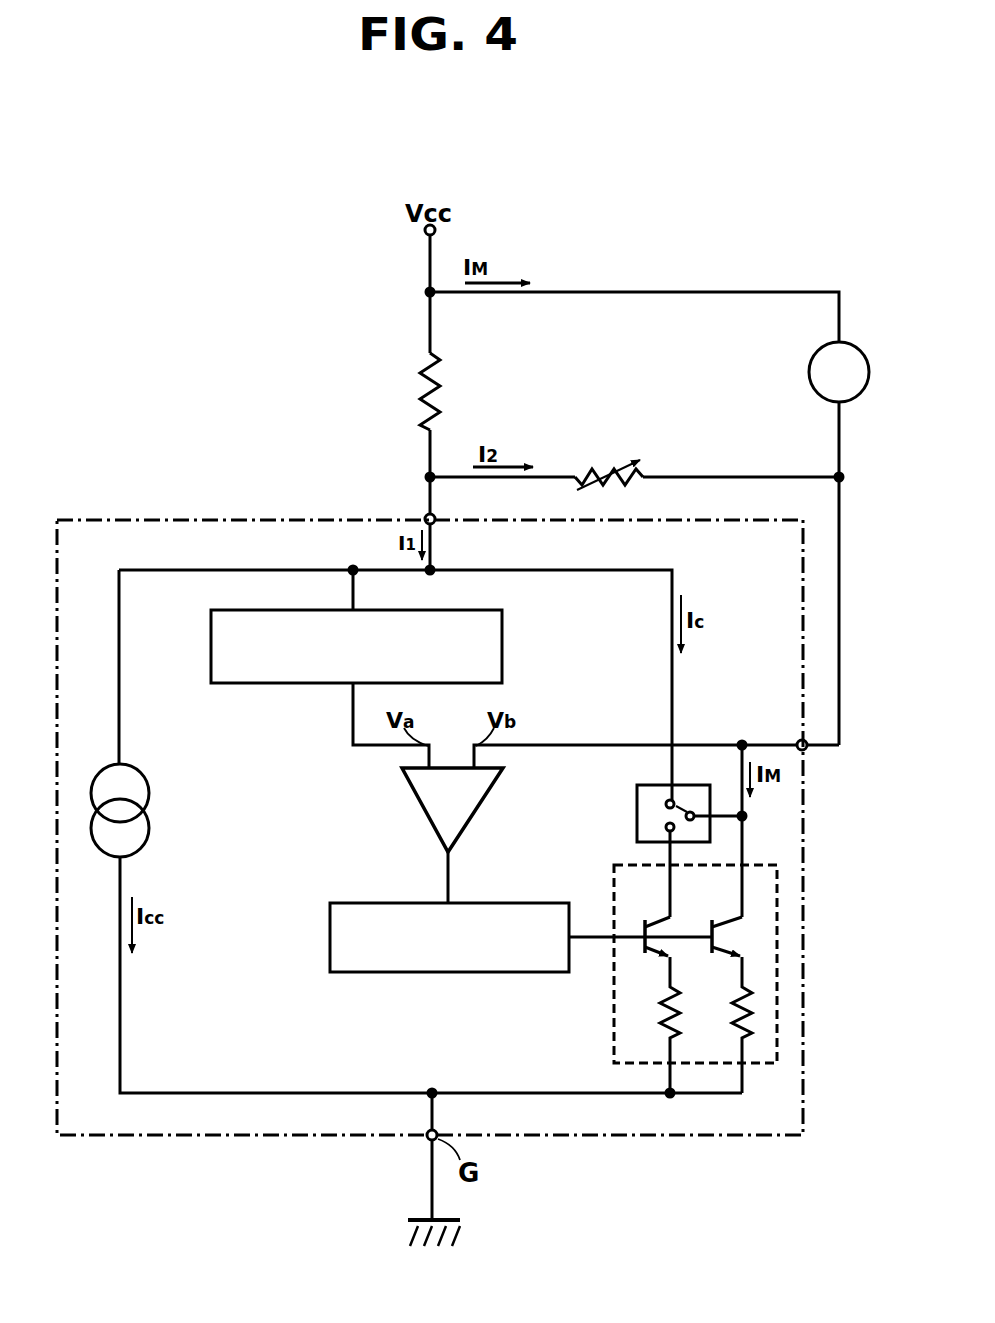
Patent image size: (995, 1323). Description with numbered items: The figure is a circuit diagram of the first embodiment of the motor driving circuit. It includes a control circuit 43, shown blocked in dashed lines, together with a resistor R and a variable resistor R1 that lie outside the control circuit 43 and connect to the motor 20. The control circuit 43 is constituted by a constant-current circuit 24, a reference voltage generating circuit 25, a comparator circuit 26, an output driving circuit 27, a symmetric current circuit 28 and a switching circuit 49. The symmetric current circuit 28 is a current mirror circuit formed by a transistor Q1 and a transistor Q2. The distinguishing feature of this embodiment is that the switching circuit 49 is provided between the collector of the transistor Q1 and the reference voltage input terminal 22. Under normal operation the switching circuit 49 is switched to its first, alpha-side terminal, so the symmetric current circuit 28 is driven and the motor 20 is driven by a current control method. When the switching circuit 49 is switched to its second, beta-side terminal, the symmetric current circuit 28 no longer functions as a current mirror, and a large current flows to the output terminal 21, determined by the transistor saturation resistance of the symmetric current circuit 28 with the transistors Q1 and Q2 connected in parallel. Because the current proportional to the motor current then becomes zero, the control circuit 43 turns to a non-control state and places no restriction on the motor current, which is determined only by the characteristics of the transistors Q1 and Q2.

The motor 20 is at (860, 392).
The output terminal 21 is at (808, 750).
The reference voltage input terminal 22 is at (426, 517).
The constant-current circuit 24 is at (148, 826).
The reference voltage generating circuit 25 is at (268, 683).
The comparator circuit 26 is at (412, 800).
The output driving circuit 27 is at (383, 972).
The symmetric current circuit 28 is at (648, 981).
The control circuit 43 is at (803, 965).
The switching circuit 49 is at (637, 816).
The resistor R is at (440, 358).
The variable resistor R1 is at (582, 470).
The transistor Q1 is at (645, 924).
The transistor Q2 is at (712, 924).